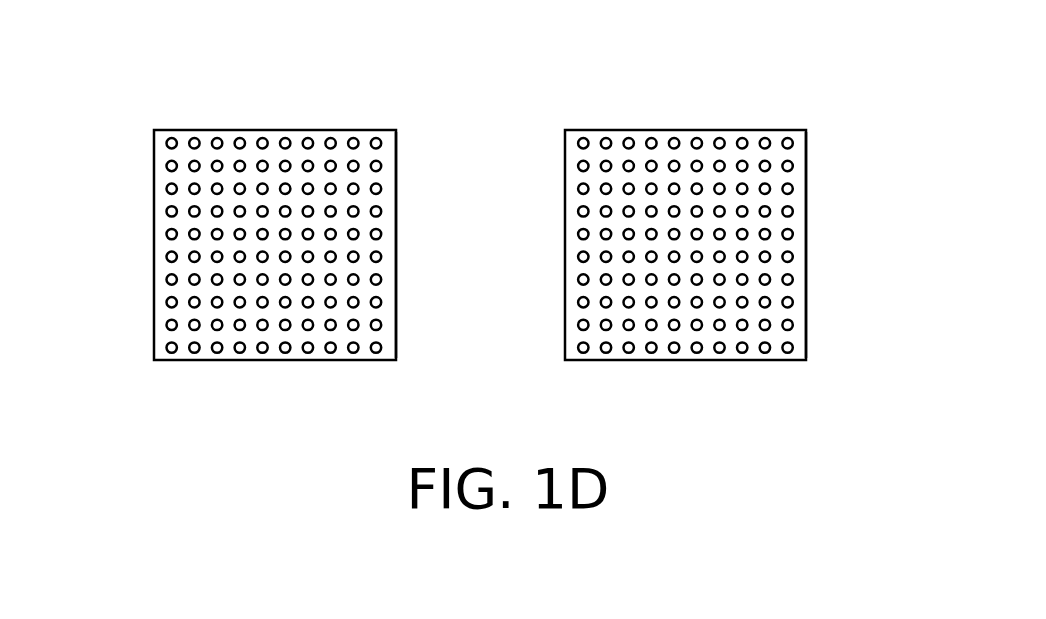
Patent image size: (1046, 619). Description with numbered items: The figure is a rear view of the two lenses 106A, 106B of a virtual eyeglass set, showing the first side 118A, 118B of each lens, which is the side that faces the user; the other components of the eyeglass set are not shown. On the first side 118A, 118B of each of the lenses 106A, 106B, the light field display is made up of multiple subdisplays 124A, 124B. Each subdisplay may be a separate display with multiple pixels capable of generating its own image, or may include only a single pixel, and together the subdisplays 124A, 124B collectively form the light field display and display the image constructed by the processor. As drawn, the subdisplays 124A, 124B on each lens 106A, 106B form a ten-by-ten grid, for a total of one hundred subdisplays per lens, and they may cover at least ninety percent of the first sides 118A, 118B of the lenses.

The lens 106A is at (155, 235).
The subdisplays 124A is at (275, 133).
The first side 118A is at (389, 268).
The lens 106B is at (806, 228).
The subdisplays 124B is at (689, 133).
The first side 118B is at (797, 325).